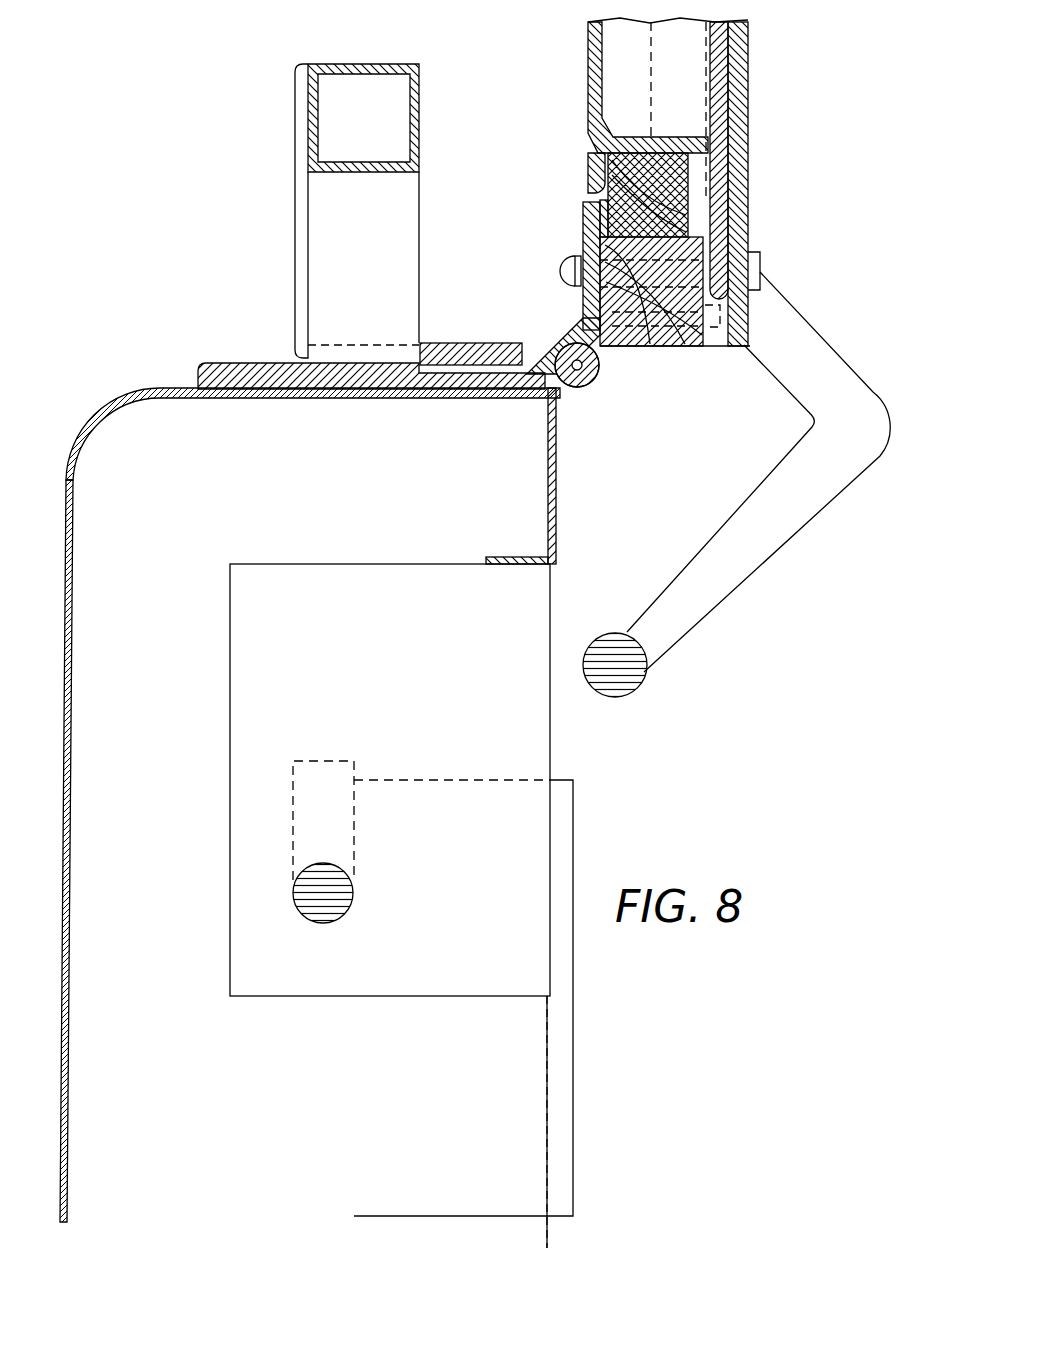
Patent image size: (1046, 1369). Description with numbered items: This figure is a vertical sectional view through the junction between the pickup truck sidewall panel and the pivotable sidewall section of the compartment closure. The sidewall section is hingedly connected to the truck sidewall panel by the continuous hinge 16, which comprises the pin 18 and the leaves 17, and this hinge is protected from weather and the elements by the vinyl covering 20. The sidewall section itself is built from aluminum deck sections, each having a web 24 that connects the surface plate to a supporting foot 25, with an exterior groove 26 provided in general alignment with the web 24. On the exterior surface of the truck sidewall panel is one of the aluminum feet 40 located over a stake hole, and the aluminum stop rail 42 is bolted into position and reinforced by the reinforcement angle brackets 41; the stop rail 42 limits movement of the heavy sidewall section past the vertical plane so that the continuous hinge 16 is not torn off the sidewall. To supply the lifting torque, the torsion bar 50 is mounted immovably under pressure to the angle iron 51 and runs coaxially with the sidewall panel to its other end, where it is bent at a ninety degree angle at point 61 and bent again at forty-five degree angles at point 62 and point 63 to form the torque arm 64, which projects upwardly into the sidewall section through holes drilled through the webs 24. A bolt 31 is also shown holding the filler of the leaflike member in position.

The continuous hinge 16 is at (528, 337).
The leaves 17 is at (490, 390).
The pin 18 is at (577, 370).
The vinyl covering 20 is at (583, 314).
The web 24 is at (659, 152).
The supporting foot 25 is at (740, 122).
The exterior groove 26 is at (596, 143).
The bolt 31 is at (608, 277).
The aluminum feet 40 is at (230, 382).
The reinforcement angle brackets 41 is at (300, 214).
The aluminum stop rail 42 is at (415, 112).
The torsion bar 50 is at (336, 892).
The angle iron 51 is at (358, 652).
The point 61 is at (616, 674).
The point 62 is at (851, 434).
The point 63 is at (690, 230).
The torque arm 64 is at (690, 78).